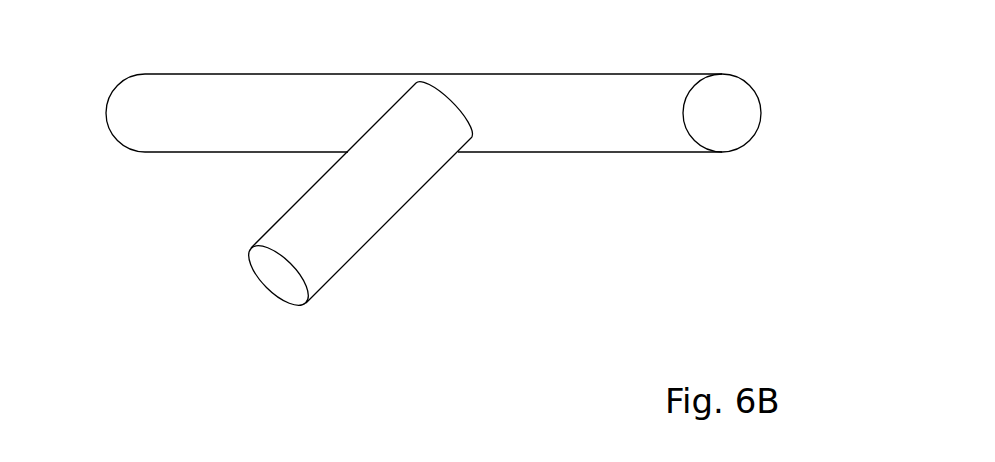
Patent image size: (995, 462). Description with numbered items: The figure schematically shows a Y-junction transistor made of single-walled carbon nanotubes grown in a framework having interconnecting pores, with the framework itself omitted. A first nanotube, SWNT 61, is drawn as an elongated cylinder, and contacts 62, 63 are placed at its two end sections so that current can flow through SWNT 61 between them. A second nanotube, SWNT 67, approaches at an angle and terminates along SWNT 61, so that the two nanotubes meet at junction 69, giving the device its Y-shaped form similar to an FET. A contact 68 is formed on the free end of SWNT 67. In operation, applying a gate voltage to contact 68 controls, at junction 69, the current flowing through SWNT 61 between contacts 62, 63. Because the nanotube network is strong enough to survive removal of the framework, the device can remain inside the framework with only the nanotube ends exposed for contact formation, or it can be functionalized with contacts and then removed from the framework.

The SWNT 61 is at (590, 152).
The contact 62 is at (107, 107).
The contact 63 is at (755, 138).
The SWNT 67 is at (373, 237).
The contact 68 is at (273, 288).
The junction 69 is at (458, 108).